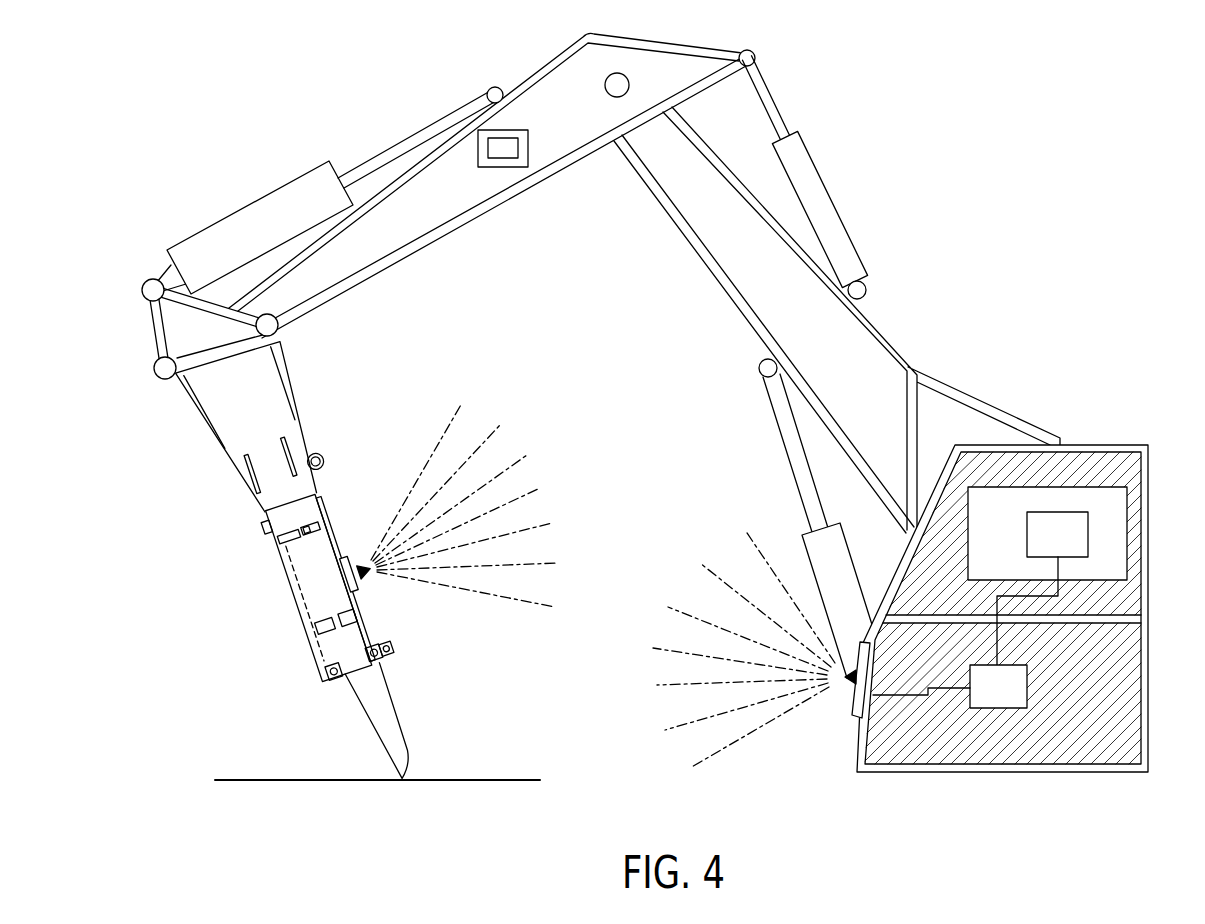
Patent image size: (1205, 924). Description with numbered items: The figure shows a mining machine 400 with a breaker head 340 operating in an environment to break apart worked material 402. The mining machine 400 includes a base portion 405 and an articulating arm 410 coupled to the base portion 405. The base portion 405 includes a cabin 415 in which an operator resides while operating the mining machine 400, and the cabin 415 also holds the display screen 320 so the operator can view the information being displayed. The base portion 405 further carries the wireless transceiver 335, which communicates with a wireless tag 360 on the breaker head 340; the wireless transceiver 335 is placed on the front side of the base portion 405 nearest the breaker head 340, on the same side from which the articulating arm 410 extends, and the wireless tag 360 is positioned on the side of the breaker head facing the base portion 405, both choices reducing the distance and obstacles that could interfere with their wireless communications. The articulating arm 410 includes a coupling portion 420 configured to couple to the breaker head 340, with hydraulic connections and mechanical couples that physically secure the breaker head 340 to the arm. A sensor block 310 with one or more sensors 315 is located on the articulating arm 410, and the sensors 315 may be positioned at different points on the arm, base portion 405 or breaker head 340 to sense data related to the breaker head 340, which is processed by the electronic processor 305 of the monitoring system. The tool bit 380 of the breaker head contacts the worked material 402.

The electronic processor 305 is at (1000, 709).
The sensor block 310 is at (514, 130).
The sensors 315 is at (488, 148).
The display screen 320 is at (1089, 537).
The wireless transceiver 335 is at (858, 718).
The breaker head 340 is at (307, 584).
The wireless tag 360 is at (372, 580).
The tool bit 380 is at (394, 722).
The mining machine 400 is at (622, 718).
The worked material 402 is at (250, 779).
The base portion 405 is at (1080, 392).
The articulating arm 410 is at (822, 50).
The cabin 415 is at (1112, 487).
The coupling portion 420 is at (114, 351).